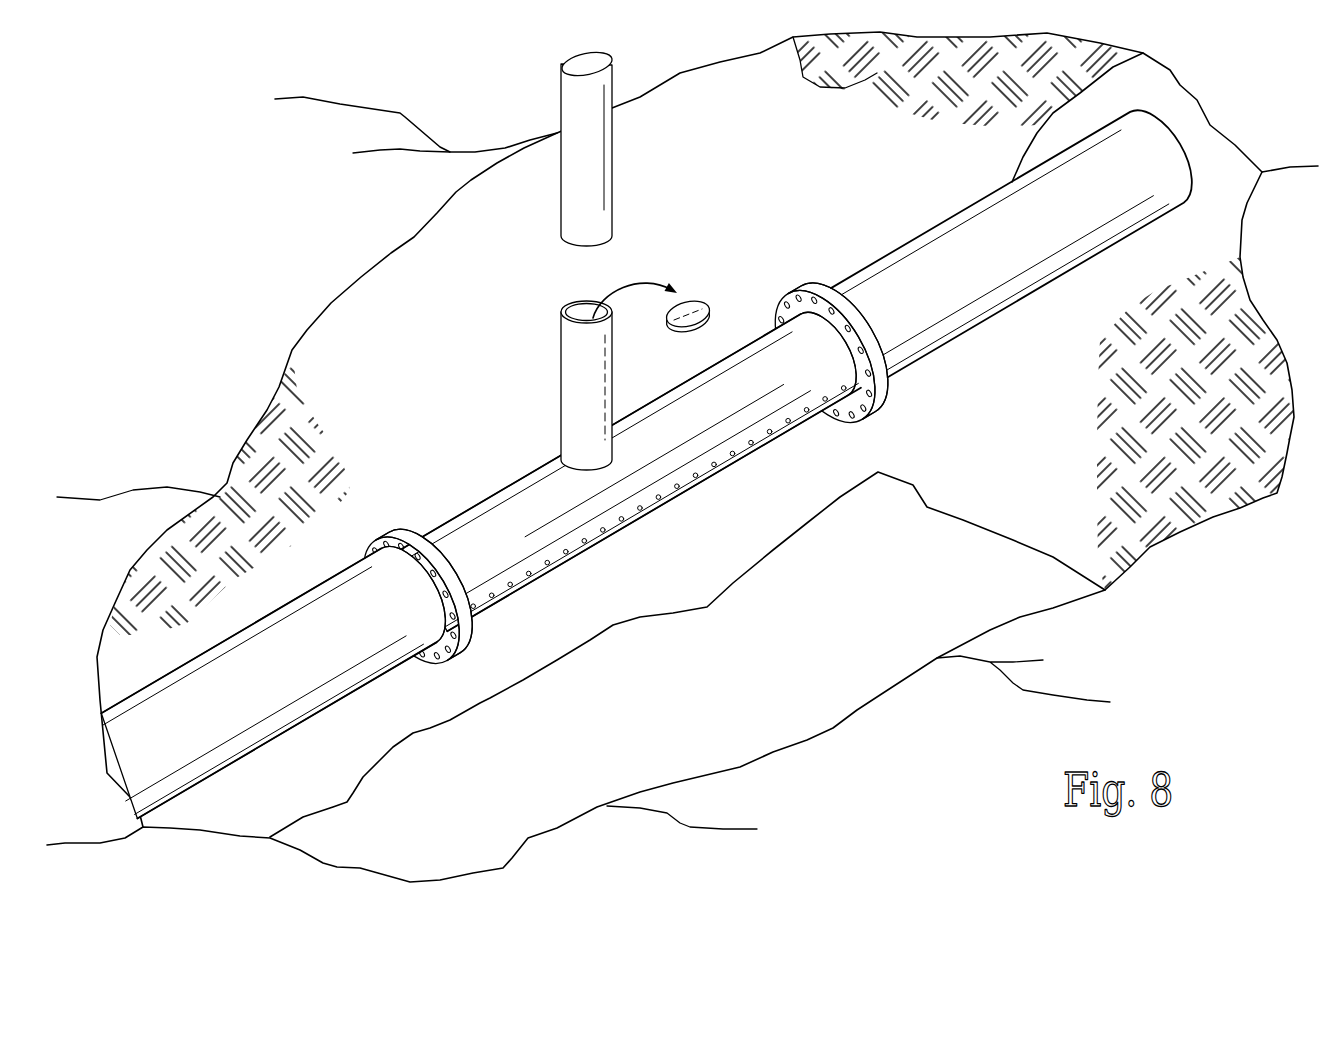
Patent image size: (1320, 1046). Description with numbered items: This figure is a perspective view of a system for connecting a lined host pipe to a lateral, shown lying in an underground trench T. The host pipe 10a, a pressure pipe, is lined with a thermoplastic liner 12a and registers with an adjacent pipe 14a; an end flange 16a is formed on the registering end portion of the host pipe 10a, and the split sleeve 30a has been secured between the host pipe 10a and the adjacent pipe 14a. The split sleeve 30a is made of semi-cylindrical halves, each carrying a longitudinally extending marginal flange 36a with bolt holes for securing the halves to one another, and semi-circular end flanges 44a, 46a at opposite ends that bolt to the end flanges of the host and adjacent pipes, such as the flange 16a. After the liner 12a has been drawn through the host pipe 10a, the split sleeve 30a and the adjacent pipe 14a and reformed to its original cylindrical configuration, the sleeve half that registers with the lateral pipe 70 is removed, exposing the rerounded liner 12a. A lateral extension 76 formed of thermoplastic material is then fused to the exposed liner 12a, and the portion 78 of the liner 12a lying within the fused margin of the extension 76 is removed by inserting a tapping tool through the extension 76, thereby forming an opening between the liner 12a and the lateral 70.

The trench T is at (770, 52).
The host pipe 10a is at (263, 700).
The thermoplastic liner 12a is at (455, 537).
The adjacent pipe 14a is at (1015, 257).
The end flange 16a is at (360, 552).
The split sleeve 30a is at (630, 471).
The longitudinally extending flange 36a is at (765, 433).
The end flange 44a is at (458, 613).
The end flange 46a is at (850, 422).
The lateral pipe 70 is at (600, 160).
The lateral extension 76 is at (560, 348).
The liner portion 78 is at (710, 302).